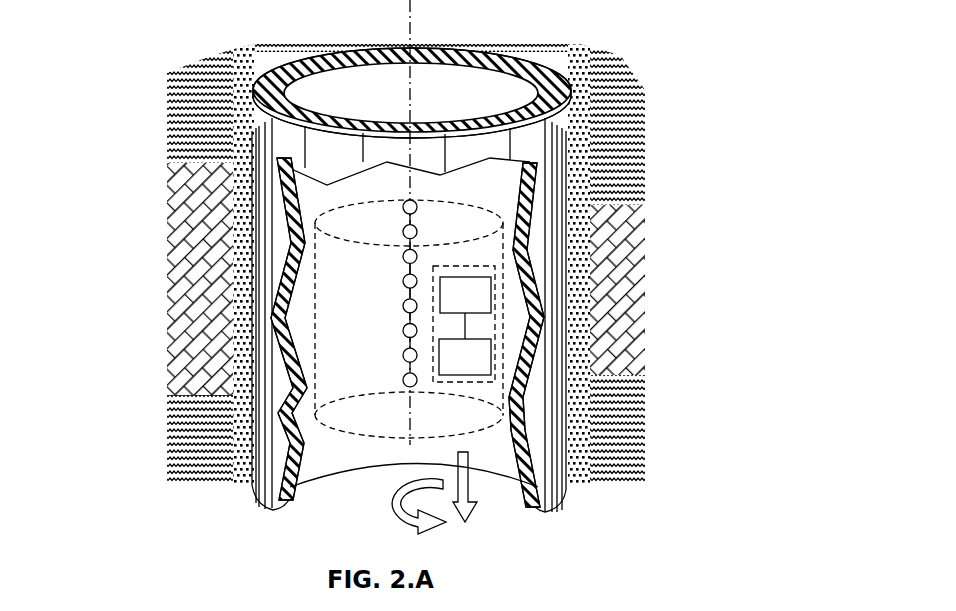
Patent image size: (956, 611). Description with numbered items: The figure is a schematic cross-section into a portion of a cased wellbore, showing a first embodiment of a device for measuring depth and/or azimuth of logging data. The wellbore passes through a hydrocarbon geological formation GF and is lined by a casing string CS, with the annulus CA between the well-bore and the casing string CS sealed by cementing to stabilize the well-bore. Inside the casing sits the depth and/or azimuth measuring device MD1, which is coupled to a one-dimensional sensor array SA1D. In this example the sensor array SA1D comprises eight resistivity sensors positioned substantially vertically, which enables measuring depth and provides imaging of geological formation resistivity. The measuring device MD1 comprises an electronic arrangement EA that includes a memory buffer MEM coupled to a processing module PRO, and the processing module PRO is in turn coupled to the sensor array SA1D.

The annulus CA is at (243, 95).
The geological formation GF is at (178, 108).
The casing string CS is at (263, 155).
The 1D sensor array SA1D is at (400, 332).
The depth and/or azimuth measuring device MD1 is at (332, 424).
The processing module PRO is at (470, 297).
The memory buffer MEM is at (472, 362).
The electronic arrangement EA is at (473, 378).